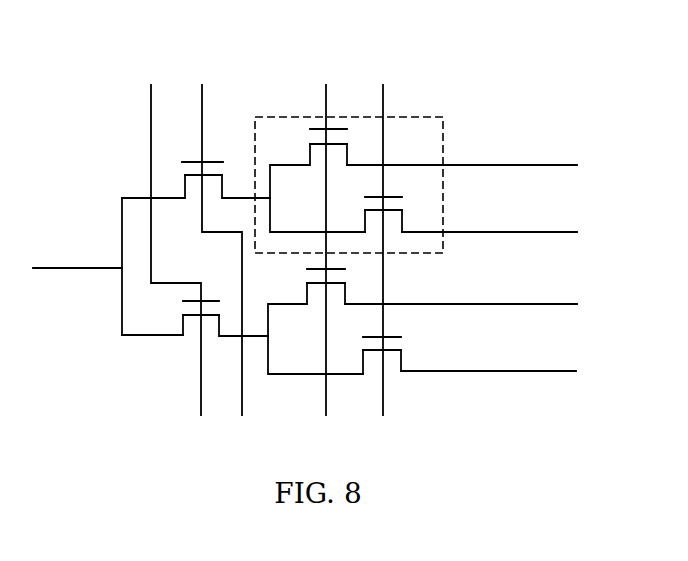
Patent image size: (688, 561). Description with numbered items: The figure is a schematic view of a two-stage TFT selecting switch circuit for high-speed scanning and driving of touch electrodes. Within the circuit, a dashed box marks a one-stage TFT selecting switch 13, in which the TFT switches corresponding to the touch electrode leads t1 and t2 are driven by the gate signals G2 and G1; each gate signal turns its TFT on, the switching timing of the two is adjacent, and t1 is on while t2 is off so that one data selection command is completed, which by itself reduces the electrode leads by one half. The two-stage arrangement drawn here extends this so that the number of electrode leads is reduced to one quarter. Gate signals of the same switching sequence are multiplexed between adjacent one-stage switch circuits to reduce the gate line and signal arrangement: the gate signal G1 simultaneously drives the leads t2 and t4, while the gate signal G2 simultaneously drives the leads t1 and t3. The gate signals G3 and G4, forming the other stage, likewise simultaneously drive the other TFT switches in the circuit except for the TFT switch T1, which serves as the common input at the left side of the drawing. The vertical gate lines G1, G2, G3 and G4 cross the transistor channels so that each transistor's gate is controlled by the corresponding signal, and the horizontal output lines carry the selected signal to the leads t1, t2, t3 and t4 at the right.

The one-stage TFT selecting switch 13 is at (443, 117).
The gate signal G1 is at (383, 233).
The gate signal G2 is at (326, 233).
The gate signal G3 is at (215, 233).
The gate signal G4 is at (165, 233).
The TFT switch T1 is at (103, 266).
The touch electrode lead t1 is at (478, 165).
The touch electrode lead t2 is at (505, 231).
The touch electrode lead t3 is at (477, 304).
The touch electrode lead t4 is at (505, 371).